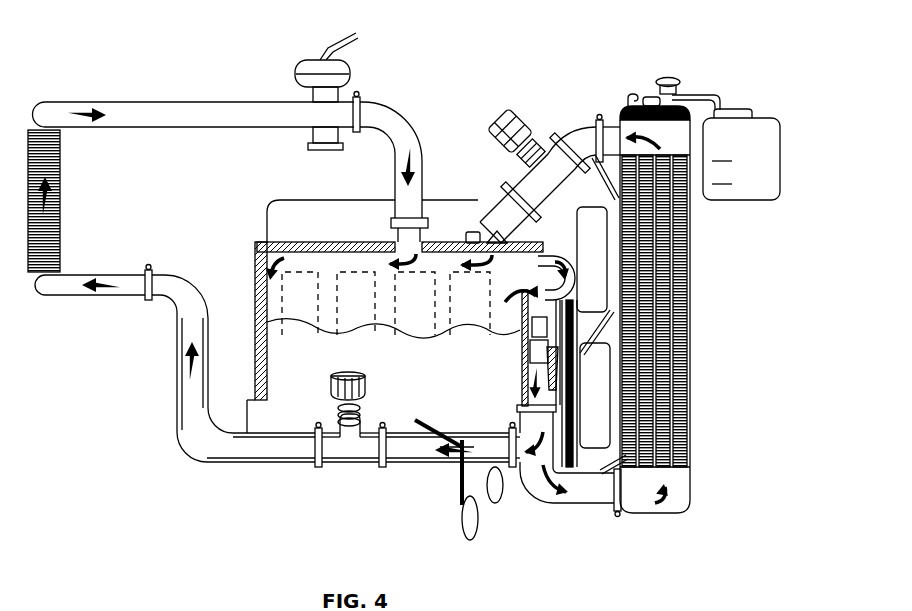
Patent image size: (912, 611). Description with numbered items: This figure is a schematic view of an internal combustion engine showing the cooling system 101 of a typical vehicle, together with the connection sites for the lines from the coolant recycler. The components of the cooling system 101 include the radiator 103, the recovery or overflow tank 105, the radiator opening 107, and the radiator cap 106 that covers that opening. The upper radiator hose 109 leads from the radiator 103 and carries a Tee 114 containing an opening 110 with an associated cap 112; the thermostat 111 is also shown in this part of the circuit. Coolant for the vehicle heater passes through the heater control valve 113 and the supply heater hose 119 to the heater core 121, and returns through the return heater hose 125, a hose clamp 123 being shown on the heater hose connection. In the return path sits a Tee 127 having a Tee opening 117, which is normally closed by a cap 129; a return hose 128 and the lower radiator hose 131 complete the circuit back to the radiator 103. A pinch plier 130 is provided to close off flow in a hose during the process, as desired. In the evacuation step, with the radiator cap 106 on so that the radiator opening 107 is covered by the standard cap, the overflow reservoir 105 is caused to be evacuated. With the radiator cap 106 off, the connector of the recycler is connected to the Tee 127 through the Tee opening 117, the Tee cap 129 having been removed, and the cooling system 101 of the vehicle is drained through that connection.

The cooling system 101 is at (86, 418).
The radiator 103 is at (697, 393).
The overflow reservoir 105 is at (770, 138).
The radiator cap 106 is at (673, 80).
The radiator opening 107 is at (650, 96).
The upper radiator hose 109 is at (582, 140).
The opening 110 is at (540, 112).
The thermostat 111 is at (468, 231).
The cap 112 is at (519, 108).
The heater control valve 113 is at (350, 67).
The Tee 114 is at (565, 200).
The Tee opening 117 is at (372, 400).
The supply heater hose 119 is at (207, 118).
The heater core 121 is at (60, 179).
The hose clamp 123 is at (146, 300).
The return heater hose 125 is at (250, 460).
The Tee 127 is at (347, 452).
The return hose 128 is at (410, 452).
The Tee cap 129 is at (365, 376).
The pinch plier 130 is at (457, 487).
The lower radiator hose 131 is at (578, 505).